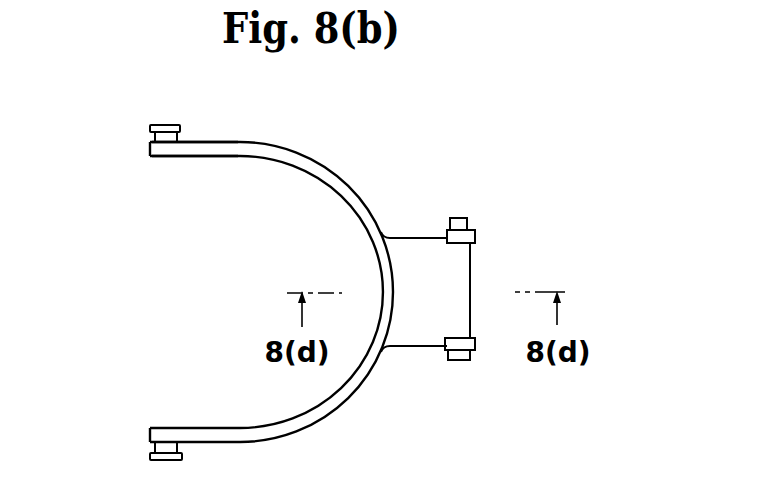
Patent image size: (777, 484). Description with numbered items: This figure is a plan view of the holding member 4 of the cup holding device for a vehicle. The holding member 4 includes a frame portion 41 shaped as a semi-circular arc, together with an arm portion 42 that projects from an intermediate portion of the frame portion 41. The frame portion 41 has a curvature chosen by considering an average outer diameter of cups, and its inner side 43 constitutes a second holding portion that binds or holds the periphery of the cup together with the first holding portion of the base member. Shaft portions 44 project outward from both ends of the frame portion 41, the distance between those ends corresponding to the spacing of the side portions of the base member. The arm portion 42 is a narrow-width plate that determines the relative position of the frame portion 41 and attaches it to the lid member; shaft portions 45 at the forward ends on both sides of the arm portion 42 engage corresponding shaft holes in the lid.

The holding member 4 is at (488, 58).
The frame portion 41 is at (320, 156).
The arm portion 42 is at (411, 226).
The inner side 43 is at (240, 157).
The shaft portions 44 is at (152, 142).
The shaft portions 45 is at (460, 221).